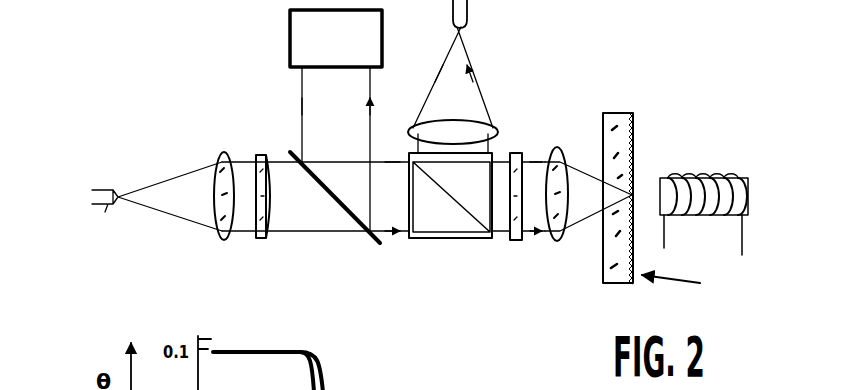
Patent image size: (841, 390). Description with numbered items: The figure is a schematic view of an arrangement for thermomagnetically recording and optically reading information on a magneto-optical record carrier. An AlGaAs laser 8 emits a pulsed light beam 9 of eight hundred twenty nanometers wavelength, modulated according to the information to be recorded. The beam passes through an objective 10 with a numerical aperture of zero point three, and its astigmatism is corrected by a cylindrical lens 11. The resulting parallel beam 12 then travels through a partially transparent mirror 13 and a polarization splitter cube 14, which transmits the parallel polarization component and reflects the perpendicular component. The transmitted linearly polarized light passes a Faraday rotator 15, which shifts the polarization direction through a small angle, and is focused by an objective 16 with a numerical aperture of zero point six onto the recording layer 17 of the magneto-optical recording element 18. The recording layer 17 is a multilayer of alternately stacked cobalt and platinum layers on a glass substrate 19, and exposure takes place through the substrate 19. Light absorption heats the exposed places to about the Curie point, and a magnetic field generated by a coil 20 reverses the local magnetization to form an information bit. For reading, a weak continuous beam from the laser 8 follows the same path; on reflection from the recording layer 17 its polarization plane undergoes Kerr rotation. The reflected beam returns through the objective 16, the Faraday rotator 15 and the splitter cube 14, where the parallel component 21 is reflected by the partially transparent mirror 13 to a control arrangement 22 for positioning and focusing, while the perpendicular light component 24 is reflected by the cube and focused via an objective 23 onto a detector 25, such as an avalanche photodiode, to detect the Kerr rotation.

The AlGaAs laser 8 is at (106, 212).
The pulsed light beam 9 is at (172, 214).
The objective 10 is at (222, 241).
The cylindrical lens 11 is at (265, 240).
The parallel beam 12 is at (312, 232).
The partially transparent mirror 13 is at (346, 236).
The polarization splitter cube 14 is at (456, 240).
The Faraday rotator 15 is at (517, 241).
The objective 16 is at (560, 242).
The recording layer 17 is at (633, 145).
The magneto-optical recording element 18 is at (686, 283).
The glass substrate 19 is at (618, 106).
The coil 20 is at (738, 178).
The parallel component 21 is at (302, 88).
The control arrangement 22 is at (300, 33).
The objective 23 is at (470, 122).
The perpendicular light component 24 is at (470, 66).
The detector 25 is at (467, 12).